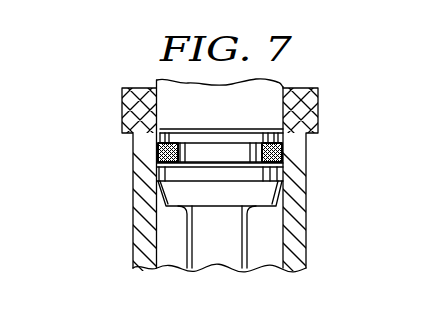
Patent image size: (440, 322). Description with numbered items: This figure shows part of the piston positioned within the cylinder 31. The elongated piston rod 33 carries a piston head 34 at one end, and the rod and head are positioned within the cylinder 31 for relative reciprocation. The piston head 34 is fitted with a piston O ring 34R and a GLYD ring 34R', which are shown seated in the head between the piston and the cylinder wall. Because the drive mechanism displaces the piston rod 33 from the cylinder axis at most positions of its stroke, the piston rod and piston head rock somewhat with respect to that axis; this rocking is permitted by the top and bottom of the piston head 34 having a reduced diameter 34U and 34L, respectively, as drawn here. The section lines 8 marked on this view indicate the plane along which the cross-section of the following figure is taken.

The cylinder 31 is at (135, 106).
The piston rod 33 is at (208, 229).
The piston head 34 is at (184, 127).
The reduced diameter 34U is at (282, 133).
The piston O ring 34R is at (219, 142).
The GLYD ring 34R' is at (277, 155).
The reduced diameter 34L is at (279, 184).
The section lines 8 is at (115, 281).